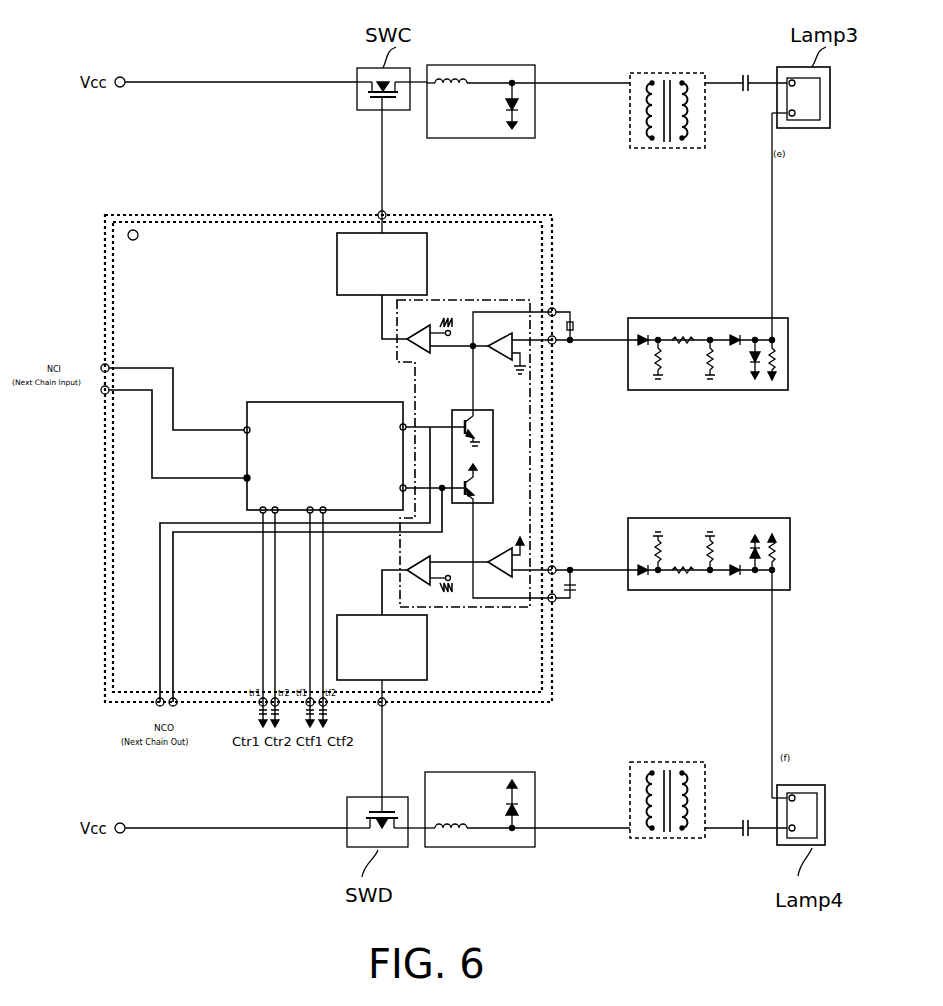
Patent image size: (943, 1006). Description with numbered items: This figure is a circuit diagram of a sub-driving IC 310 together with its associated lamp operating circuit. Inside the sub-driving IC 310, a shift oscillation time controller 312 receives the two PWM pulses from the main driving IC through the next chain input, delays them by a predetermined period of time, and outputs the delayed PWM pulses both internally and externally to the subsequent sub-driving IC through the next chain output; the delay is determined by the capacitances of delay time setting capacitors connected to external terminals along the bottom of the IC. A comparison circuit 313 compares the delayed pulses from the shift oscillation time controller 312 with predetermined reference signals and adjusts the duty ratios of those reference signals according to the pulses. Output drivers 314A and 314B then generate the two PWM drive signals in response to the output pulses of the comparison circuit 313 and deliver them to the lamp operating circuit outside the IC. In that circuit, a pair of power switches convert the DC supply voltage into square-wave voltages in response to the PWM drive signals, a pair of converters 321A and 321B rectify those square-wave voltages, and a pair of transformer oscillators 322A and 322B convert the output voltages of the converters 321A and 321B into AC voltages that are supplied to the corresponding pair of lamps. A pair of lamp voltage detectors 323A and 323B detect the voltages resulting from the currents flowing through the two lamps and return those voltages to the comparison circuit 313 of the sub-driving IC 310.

The sub-driving IC 310 is at (553, 428).
The shift oscillation time controller 312 is at (298, 402).
The comparison circuit 313 is at (506, 300).
The output driver 314A is at (337, 268).
The output driver 314B is at (427, 652).
The converter 321A is at (479, 65).
The converter 321B is at (478, 850).
The transformer oscillator 322A is at (681, 53).
The transformer oscillator 322B is at (678, 840).
The lamp voltage detector 323A is at (700, 318).
The lamp voltage detector 323B is at (703, 590).